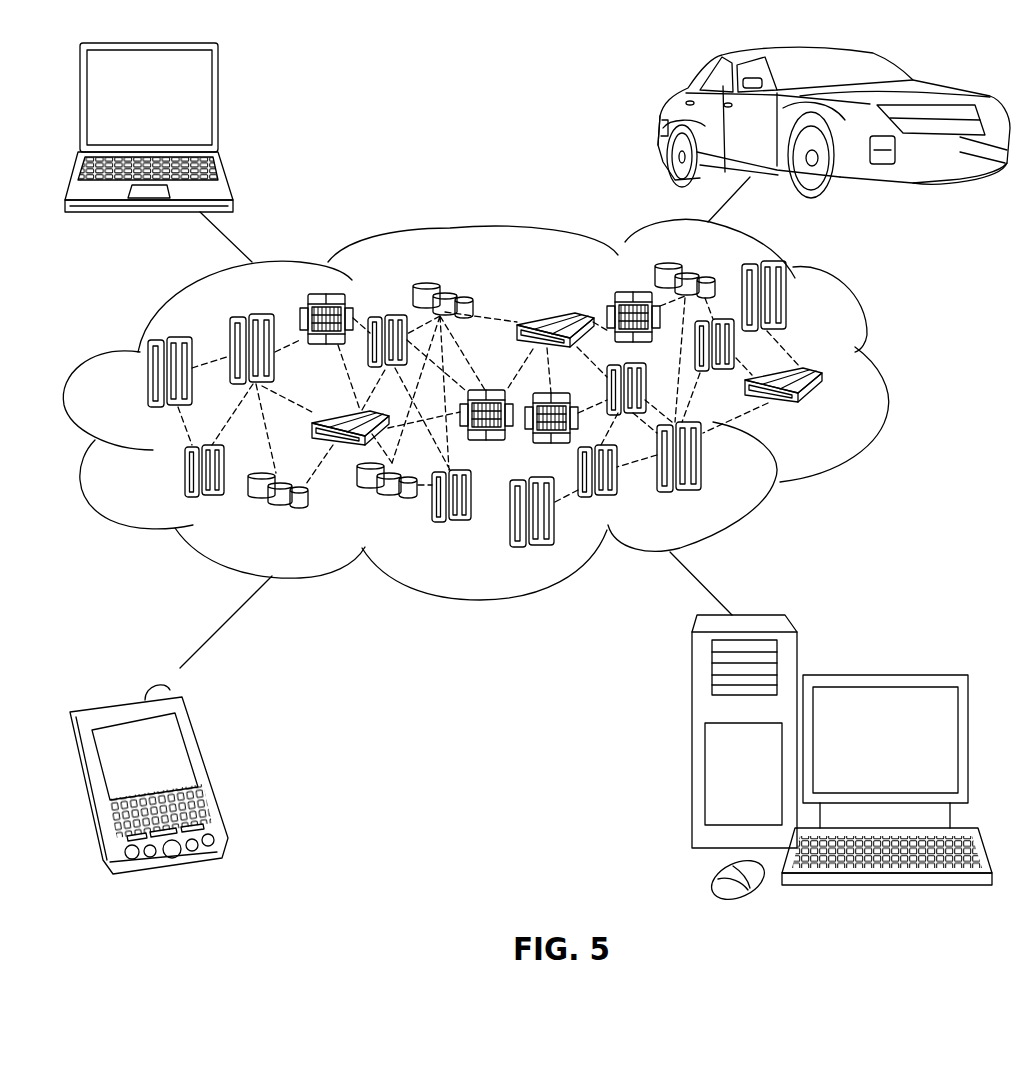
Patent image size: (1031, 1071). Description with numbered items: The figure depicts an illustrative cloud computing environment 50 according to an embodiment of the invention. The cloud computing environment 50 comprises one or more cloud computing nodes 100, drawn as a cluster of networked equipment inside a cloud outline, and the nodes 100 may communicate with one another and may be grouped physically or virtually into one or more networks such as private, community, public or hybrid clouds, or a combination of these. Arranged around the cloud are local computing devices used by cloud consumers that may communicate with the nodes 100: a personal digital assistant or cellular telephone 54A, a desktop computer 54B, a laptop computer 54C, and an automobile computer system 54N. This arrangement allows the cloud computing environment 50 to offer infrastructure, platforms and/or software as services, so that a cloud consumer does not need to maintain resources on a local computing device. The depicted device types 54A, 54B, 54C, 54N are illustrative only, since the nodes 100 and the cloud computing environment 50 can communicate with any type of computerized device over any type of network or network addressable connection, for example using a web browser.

The cloud computing environment 50 is at (882, 382).
The cloud computing node 100 is at (823, 412).
The personal digital assistant (PDA) or cellular telephone 54A is at (209, 769).
The desktop computer 54B is at (882, 676).
The laptop computer 54C is at (220, 107).
The automobile computer system 54N is at (661, 123).